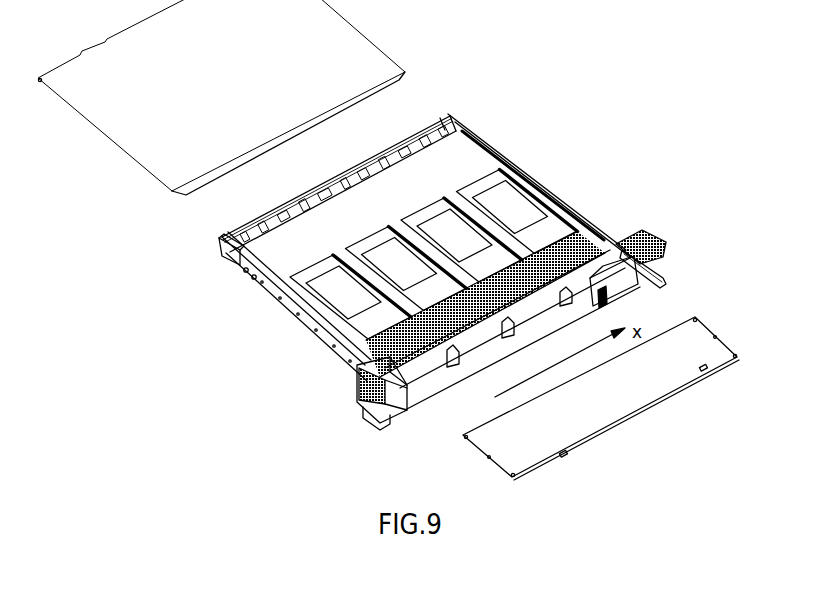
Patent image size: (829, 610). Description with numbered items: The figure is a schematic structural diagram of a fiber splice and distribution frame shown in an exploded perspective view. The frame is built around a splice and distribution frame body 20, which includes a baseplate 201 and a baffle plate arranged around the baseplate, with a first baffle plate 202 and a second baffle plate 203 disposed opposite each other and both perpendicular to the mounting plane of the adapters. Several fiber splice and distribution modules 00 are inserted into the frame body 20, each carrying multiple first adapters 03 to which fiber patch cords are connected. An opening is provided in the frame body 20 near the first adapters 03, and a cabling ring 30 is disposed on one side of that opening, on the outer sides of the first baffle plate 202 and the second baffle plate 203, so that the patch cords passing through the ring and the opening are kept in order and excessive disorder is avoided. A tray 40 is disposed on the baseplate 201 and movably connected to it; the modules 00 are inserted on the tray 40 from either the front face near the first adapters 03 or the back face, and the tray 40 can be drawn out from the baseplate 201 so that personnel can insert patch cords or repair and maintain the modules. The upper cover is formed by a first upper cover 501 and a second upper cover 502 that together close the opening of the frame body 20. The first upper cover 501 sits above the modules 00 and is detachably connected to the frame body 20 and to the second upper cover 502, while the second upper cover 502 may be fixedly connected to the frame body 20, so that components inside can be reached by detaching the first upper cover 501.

The first upper cover 501 is at (175, 165).
The baseplate 201 is at (445, 168).
The first baffle plate 202 is at (295, 308).
The second baffle plate 203 is at (600, 233).
The splice and distribution frame body 20 is at (250, 253).
The fiber splice and distribution module 00 is at (522, 207).
The tray 40 is at (472, 330).
The first adapters 03 is at (363, 353).
The cabling ring 30 is at (367, 412).
The second upper cover 502 is at (585, 420).